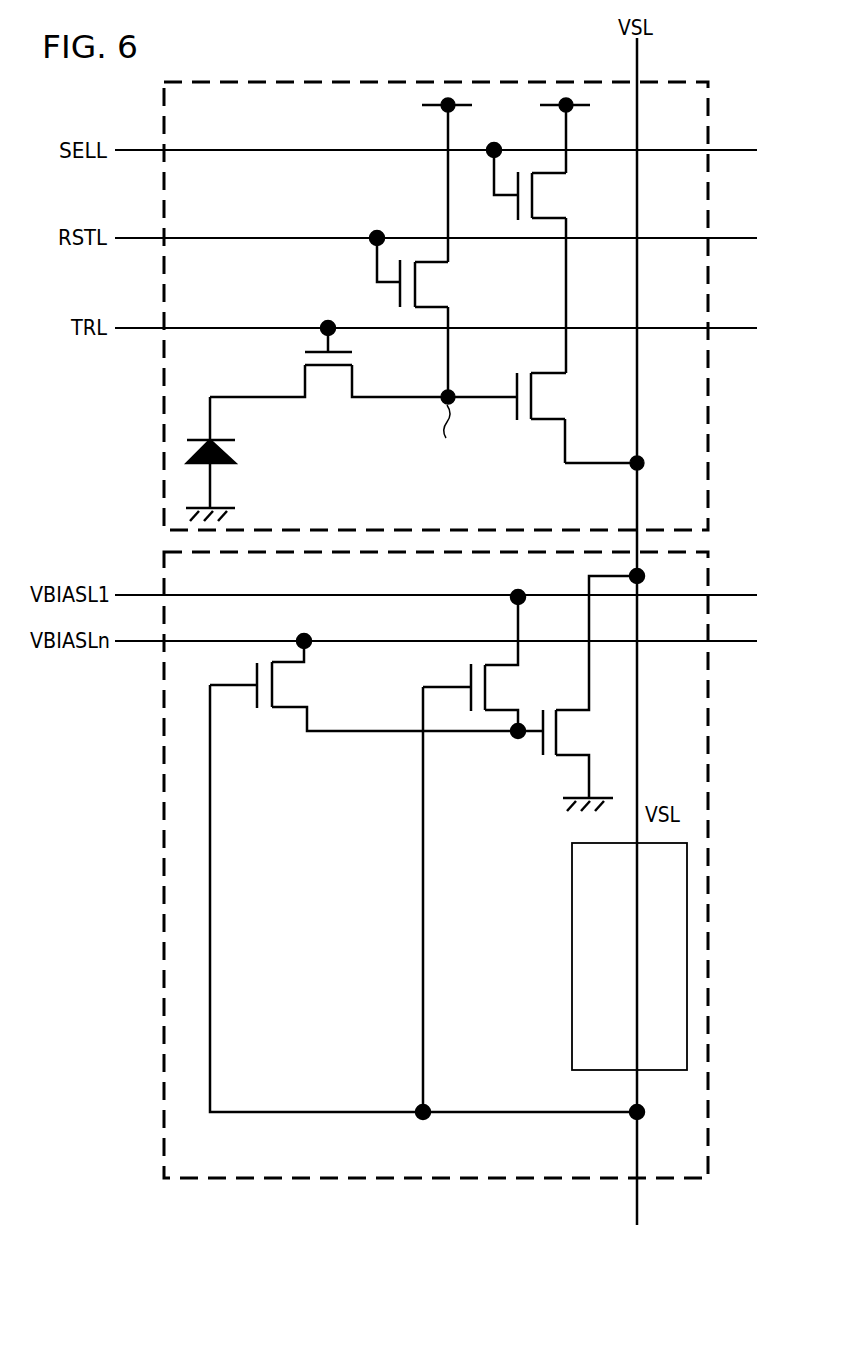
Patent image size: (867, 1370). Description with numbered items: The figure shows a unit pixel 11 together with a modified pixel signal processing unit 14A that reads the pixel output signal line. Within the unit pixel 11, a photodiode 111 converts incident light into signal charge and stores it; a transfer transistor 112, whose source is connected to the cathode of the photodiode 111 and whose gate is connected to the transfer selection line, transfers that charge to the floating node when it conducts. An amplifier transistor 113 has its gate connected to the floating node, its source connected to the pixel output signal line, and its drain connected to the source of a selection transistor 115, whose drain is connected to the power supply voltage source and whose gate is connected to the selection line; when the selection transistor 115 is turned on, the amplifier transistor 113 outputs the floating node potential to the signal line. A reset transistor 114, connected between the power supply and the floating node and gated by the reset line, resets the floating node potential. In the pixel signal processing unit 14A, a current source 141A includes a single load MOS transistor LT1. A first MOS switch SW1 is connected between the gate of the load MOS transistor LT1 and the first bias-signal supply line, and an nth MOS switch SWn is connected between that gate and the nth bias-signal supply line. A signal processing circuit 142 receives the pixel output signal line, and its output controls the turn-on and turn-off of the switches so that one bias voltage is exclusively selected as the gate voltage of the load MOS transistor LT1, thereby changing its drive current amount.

The unit pixel 11 is at (328, 80).
The photodiode 111 is at (225, 452).
The transfer transistor 112 is at (327, 378).
The amplifier transistor 113 is at (548, 397).
The reset transistor 114 is at (432, 286).
The selection transistor 115 is at (548, 199).
The pixel signal processing unit 14A is at (708, 800).
The current source 141A is at (359, 844).
The signal processing circuit 142 is at (687, 943).
The first MOS switch SW1 is at (290, 686).
The nth MOS switch SWn is at (551, 690).
The load MOS transistor LT1 is at (547, 752).